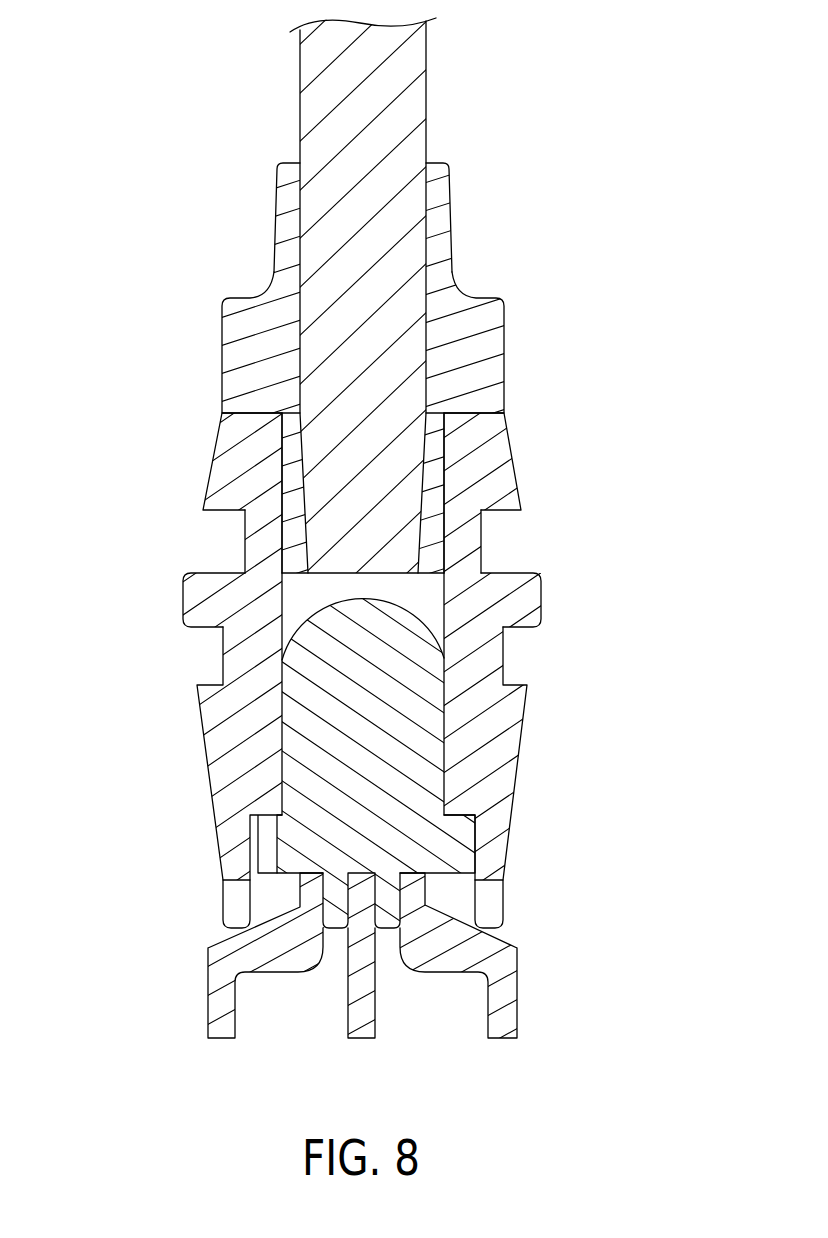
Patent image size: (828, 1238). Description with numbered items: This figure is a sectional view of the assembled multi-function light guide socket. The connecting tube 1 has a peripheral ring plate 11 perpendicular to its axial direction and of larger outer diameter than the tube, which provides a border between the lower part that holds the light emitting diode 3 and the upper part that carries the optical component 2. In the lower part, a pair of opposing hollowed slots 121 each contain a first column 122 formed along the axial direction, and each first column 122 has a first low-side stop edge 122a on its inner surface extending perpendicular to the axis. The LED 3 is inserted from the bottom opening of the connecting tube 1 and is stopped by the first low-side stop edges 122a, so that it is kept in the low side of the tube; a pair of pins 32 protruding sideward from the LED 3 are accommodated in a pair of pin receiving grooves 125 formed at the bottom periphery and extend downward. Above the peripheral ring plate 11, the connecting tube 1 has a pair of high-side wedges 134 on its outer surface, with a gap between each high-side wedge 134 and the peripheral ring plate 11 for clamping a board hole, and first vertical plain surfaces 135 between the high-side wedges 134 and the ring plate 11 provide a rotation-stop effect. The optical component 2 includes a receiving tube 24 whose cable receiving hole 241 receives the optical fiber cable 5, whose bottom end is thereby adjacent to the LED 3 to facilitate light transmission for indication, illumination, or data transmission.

The optical fiber cable 5 is at (330, 88).
The optical component 2 is at (427, 373).
The cable receiving hole 241 is at (423, 218).
The receiving tube 24 is at (450, 290).
The connecting tube 1 is at (363, 644).
The high-side wedge 134 is at (220, 483).
The first vertical plain surface 135 is at (245, 536).
The peripheral ring plate 11 is at (530, 605).
The hollowed slot 121 is at (420, 597).
The first column 122 is at (510, 730).
The first low-side stop edge 122a is at (463, 815).
The pin receiving groove 125 is at (488, 895).
The light emitting diode 3 is at (418, 748).
The pin 32 is at (502, 1007).